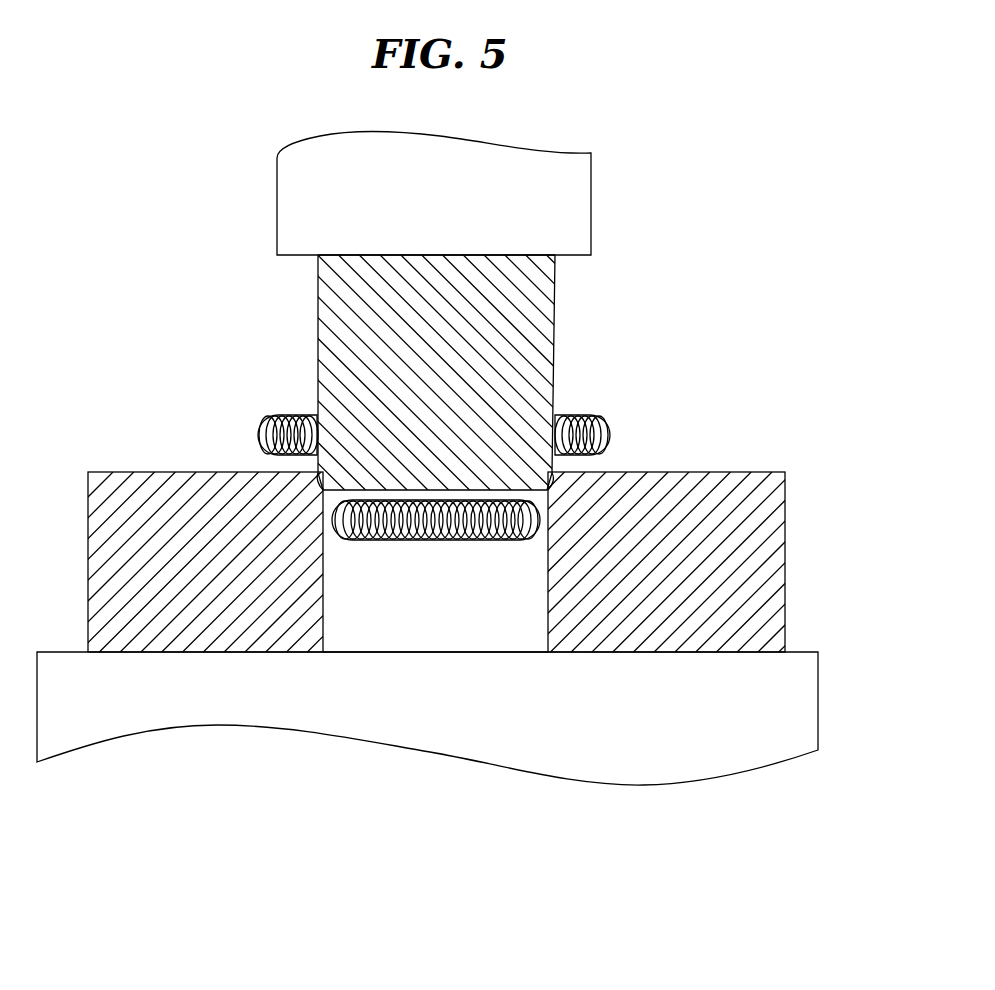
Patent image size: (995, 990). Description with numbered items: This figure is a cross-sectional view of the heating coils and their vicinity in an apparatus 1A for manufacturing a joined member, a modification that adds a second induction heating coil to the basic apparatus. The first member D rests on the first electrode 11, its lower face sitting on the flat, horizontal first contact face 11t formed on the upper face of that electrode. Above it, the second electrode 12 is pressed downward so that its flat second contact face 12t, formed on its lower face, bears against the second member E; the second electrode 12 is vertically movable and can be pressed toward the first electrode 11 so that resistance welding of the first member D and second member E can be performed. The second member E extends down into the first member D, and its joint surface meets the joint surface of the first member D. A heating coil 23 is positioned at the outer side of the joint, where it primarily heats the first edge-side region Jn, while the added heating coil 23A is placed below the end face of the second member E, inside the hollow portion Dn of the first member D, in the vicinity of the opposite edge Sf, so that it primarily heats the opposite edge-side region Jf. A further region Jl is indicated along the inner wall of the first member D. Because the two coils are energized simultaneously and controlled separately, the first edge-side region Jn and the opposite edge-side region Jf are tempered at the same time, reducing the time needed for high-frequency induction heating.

The apparatus for manufacturing joined member 1A is at (186, 208).
The second electrode 12 is at (591, 205).
The second contact face 12t is at (580, 255).
The second member E is at (555, 347).
The heating coil 23 is at (605, 425).
The first member D is at (785, 515).
The heating coil 23A is at (481, 545).
The first edge-side region Jn is at (280, 470).
The opposite edge Sf is at (311, 485).
The joint portion Jl is at (325, 490).
The opposite edge-side region Jf is at (597, 470).
The first electrode 11 is at (820, 700).
The first contact face 11t is at (795, 652).
The die cavity Dn is at (370, 630).